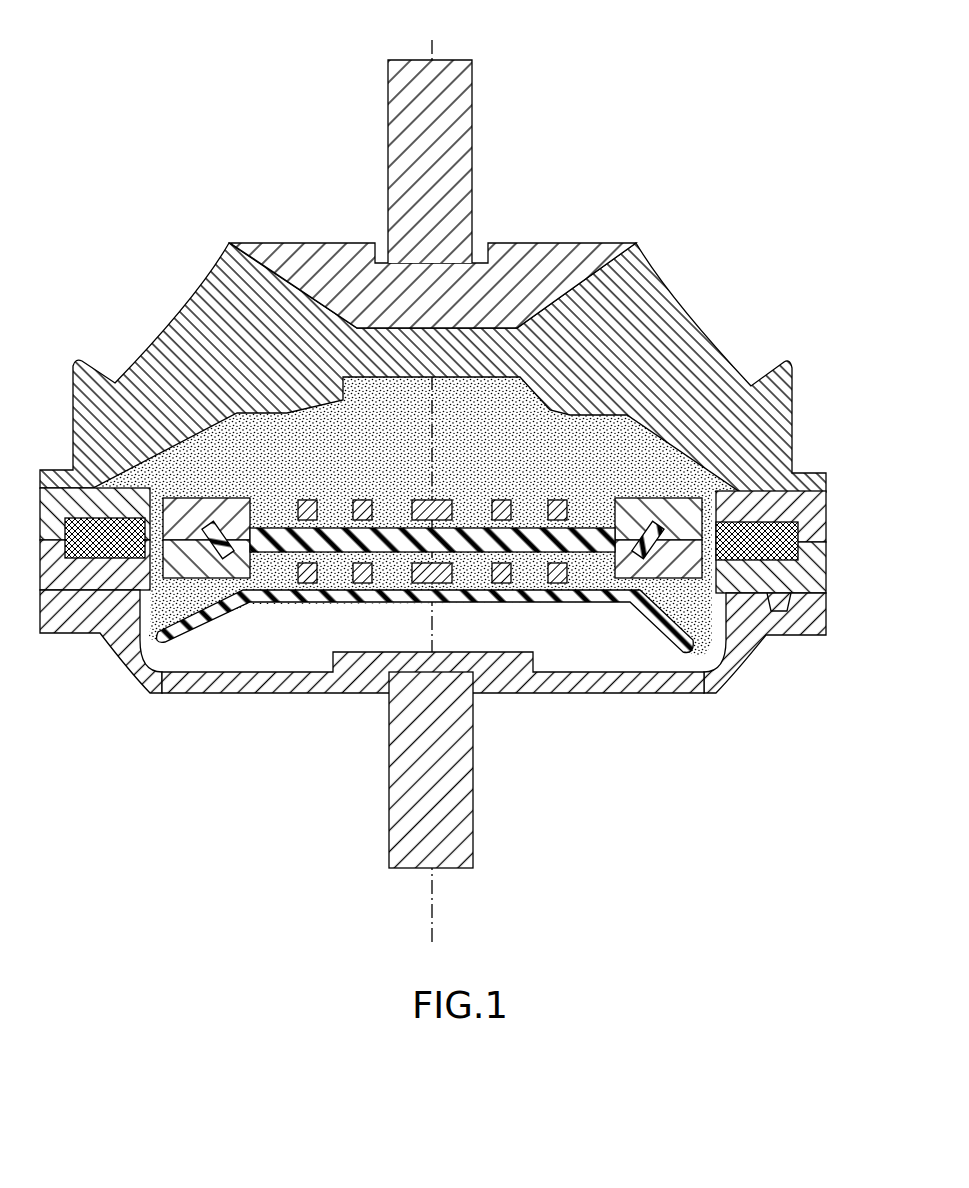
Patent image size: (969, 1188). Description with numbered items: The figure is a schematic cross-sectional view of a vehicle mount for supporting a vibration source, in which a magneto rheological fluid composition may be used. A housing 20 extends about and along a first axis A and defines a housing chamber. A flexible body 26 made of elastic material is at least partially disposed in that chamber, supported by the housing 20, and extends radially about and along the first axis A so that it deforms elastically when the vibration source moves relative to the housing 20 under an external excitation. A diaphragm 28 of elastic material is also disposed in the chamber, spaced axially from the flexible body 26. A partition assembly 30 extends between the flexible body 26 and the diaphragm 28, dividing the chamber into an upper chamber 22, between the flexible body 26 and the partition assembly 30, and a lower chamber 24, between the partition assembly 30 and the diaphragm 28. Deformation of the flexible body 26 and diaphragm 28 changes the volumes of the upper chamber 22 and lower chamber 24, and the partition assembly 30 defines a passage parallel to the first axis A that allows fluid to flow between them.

The first axis A is at (436, 48).
The housing 20 is at (537, 244).
The upper chamber 22 is at (584, 416).
The lower chamber 24 is at (608, 672).
The flexible body 26 is at (676, 313).
The diaphragm 28 is at (727, 603).
The partition assembly 30 is at (826, 522).